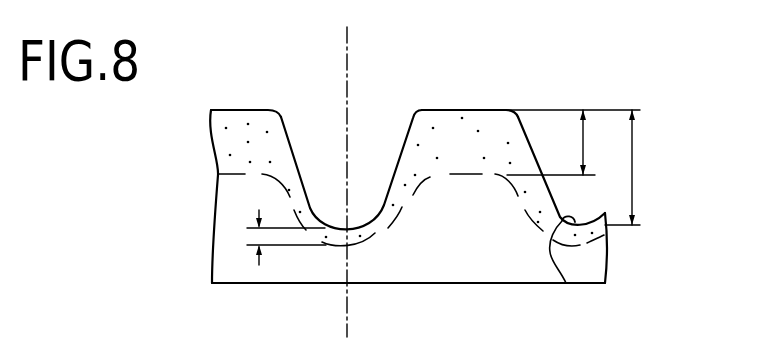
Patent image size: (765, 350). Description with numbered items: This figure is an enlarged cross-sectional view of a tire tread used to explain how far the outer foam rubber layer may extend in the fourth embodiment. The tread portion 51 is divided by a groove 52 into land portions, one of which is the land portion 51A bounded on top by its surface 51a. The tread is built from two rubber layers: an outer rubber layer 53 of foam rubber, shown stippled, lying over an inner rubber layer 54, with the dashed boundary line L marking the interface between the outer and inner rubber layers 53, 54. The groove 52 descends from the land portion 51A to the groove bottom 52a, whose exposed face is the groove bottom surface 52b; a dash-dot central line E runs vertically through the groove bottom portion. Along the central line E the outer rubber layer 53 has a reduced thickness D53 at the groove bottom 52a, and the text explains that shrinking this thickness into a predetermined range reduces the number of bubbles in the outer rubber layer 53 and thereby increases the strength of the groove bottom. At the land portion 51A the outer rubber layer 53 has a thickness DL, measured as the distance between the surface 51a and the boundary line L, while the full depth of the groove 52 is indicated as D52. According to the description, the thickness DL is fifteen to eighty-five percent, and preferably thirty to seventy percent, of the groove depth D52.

The tread portion 51 is at (243, 105).
The land portion 51A is at (438, 110).
The surface 51a is at (482, 110).
The groove 52 is at (280, 116).
The groove bottom 52a is at (371, 217).
The groove bottom surface 52b is at (344, 226).
The outer rubber layer 53 is at (503, 127).
The inner rubber layer 54 is at (583, 262).
The boundary line L is at (468, 173).
The central line E is at (347, 42).
The thickness of outer rubber layer at groove bottom D53 is at (253, 236).
The thickness of outer rubber layer at land portion DL is at (573, 142).
The depth of groove D52 is at (647, 167).